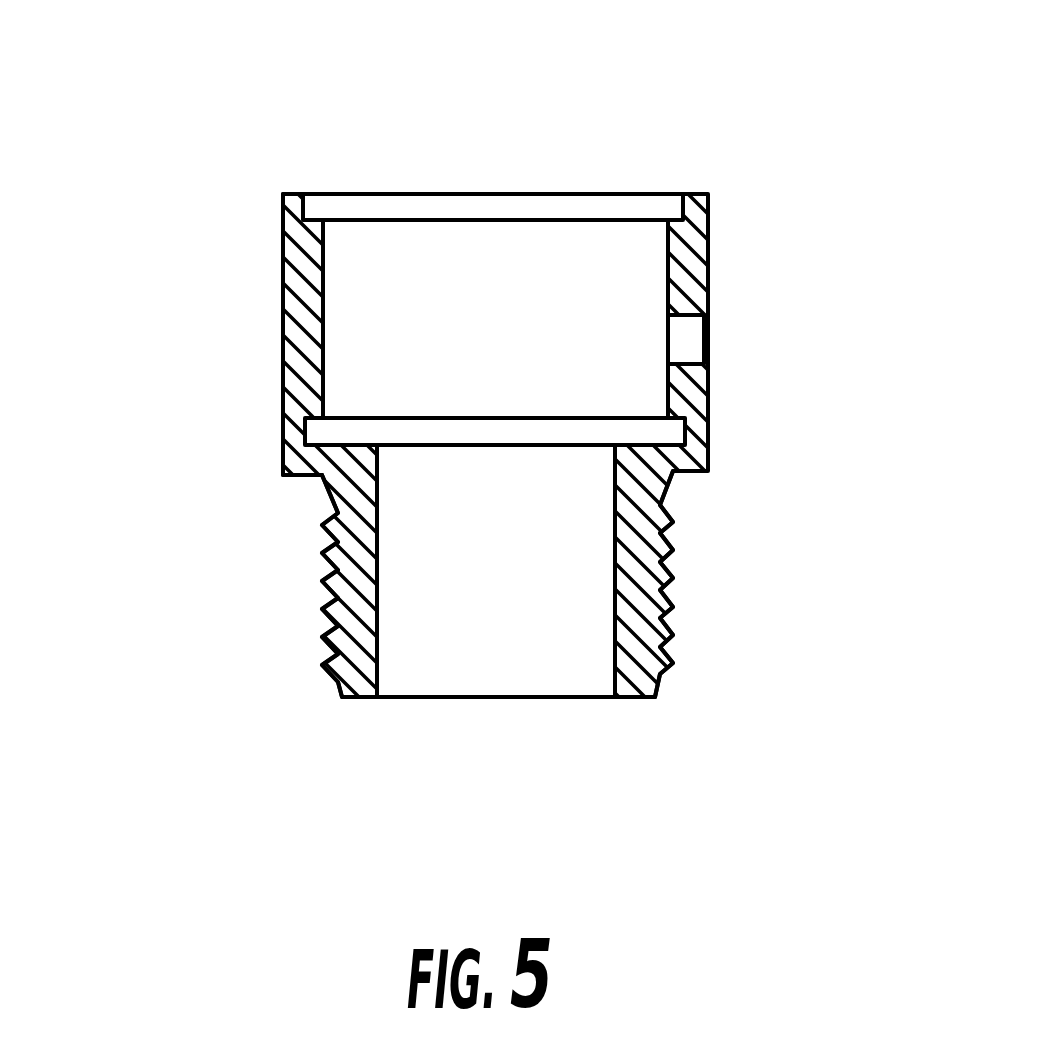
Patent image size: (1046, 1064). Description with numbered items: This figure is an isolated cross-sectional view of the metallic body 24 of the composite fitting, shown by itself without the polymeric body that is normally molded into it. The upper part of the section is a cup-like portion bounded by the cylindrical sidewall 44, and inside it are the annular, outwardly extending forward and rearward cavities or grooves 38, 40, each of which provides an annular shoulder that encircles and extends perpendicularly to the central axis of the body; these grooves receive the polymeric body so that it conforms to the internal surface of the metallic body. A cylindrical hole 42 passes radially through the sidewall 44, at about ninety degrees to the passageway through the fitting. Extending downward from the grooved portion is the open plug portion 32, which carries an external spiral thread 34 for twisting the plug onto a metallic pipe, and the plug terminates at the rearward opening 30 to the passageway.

The metallic body 24 is at (792, 136).
The rearward opening 30 is at (494, 705).
The open plug portion 32 is at (690, 622).
The external spiral thread 34 is at (327, 574).
The forward groove 38 is at (305, 218).
The rearward groove 40 is at (283, 413).
The cylindrical hole 42 is at (692, 328).
The cylindrical sidewall 44 is at (283, 265).